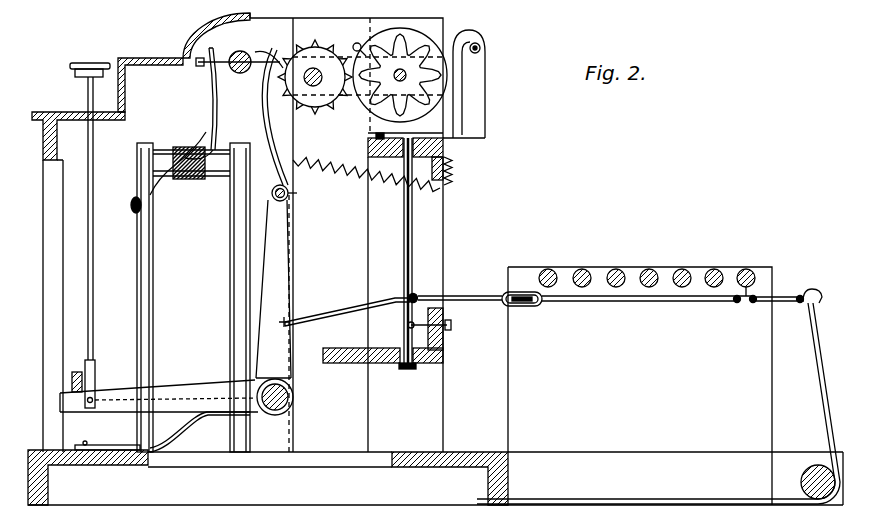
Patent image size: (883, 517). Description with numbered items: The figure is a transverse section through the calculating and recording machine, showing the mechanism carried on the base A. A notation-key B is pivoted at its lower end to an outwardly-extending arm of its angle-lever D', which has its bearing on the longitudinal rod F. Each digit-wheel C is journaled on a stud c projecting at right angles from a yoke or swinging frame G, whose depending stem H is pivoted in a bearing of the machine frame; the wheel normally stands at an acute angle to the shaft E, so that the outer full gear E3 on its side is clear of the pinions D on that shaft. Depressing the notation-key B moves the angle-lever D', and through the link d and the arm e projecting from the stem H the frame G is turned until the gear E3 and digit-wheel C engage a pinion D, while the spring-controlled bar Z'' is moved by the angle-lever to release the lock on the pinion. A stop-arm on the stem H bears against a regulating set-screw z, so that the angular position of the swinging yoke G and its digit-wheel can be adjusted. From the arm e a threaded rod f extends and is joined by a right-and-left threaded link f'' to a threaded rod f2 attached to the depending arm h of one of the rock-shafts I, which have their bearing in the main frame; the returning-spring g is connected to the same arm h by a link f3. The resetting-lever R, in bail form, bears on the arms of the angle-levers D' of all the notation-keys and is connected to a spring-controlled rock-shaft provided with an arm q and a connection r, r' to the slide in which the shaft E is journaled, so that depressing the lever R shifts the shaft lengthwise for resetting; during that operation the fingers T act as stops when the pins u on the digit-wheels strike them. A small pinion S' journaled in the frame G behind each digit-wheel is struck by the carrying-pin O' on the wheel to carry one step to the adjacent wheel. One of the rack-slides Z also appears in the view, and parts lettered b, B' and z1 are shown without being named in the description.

The base A is at (452, 452).
The notation-key B is at (90, 226).
The resetting-lever R is at (77, 372).
The angle-lever D' is at (159, 381).
The hub of lever b is at (282, 375).
The longitudinal rod F is at (293, 404).
The lever bar B' is at (284, 289).
The spring-controlled bar Z'' is at (294, 193).
The rack-slide Z is at (268, 116).
The connection to slide r' is at (239, 53).
The connection to slide r is at (194, 70).
The finger T is at (262, 50).
The arm q is at (207, 88).
The small pinion S' is at (190, 297).
The pinion D is at (315, 77).
The shaft E is at (318, 75).
The digit-wheel C is at (400, 74).
The stud c is at (400, 69).
The pin u is at (357, 43).
The gear-wheel E3 is at (460, 46).
The carrying-pin O' is at (490, 33).
The swinging frame G is at (474, 142).
The depending stem H is at (413, 232).
The arm e is at (419, 298).
The link d is at (350, 306).
The regulating set-screw z is at (450, 332).
The screw nut z1 is at (406, 326).
The threaded rod f is at (460, 288).
The right and left threaded link f'' is at (522, 314).
The threaded rod f2 is at (612, 305).
The depending arm h is at (744, 306).
The link f3 is at (790, 308).
The rock-shaft I is at (757, 256).
The returning-spring g is at (824, 420).